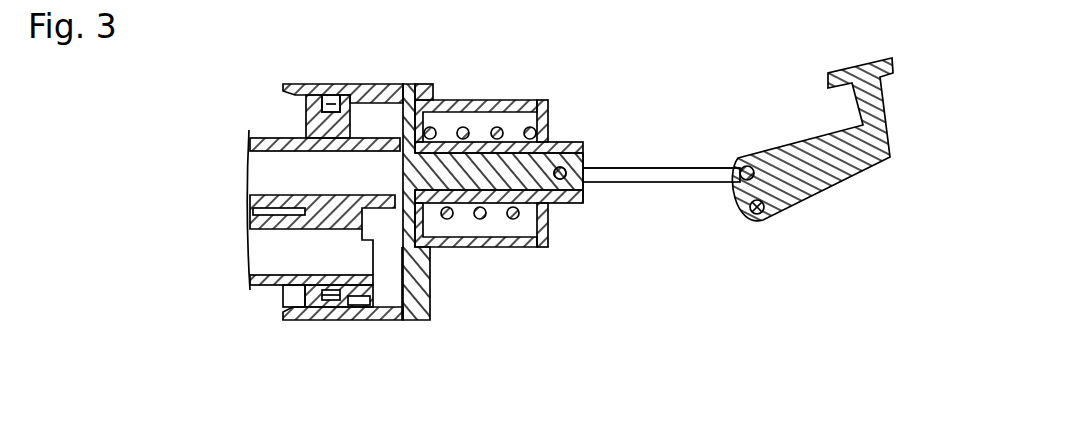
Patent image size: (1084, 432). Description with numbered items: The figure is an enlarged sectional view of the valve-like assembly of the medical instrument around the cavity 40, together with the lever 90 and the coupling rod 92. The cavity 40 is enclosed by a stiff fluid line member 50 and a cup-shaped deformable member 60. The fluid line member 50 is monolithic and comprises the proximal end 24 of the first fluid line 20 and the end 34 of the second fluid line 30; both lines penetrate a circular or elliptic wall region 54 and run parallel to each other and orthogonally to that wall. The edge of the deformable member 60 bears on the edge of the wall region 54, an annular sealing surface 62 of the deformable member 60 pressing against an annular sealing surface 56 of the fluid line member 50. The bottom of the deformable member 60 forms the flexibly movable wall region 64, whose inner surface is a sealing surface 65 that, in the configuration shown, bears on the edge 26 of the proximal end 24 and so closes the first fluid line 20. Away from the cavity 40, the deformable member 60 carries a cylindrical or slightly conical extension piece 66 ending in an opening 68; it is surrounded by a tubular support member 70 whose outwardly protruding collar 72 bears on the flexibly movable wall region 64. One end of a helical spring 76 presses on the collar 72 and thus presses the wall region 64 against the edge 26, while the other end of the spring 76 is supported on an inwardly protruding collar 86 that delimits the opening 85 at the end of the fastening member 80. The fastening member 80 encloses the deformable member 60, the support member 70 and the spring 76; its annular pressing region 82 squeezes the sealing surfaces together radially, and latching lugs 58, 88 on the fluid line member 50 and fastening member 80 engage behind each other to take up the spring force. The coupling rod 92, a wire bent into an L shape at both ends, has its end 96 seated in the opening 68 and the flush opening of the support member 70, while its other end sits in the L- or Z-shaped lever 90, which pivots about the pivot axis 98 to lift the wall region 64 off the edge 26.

The first fluid line 20 is at (268, 155).
The second fluid line 30 is at (267, 270).
The latching lug 88 is at (300, 152).
The latching lug 58 is at (312, 97).
The annular pressing region 82 is at (345, 92).
The proximal end of the first fluid line 24 is at (402, 140).
The flexibly movable wall region 64 is at (410, 118).
The outwardly protruding collar 72 is at (425, 122).
The inwardly protruding collar 86 is at (548, 143).
The helical spring 76 is at (545, 130).
The fastening member 80 is at (505, 101).
The edge of the proximal end 26 is at (410, 207).
The sealing surface 65 is at (492, 195).
The extension piece 66 is at (545, 200).
The support member 70 is at (555, 192).
The opening 85 is at (565, 170).
The opening 68 is at (562, 184).
The coupling rod 92 is at (722, 108).
The end of the coupling rod 96 is at (683, 167).
The lever 90 is at (845, 182).
The pivot axis 98 is at (760, 213).
The wall region 54 is at (323, 215).
The fluid line member 50 is at (293, 283).
The end of the second fluid line 34 is at (368, 289).
The annular sealing surface 56 is at (356, 290).
The annular sealing surface 62 is at (347, 293).
The deformable member 60 is at (378, 296).
The cavity 40 is at (400, 268).